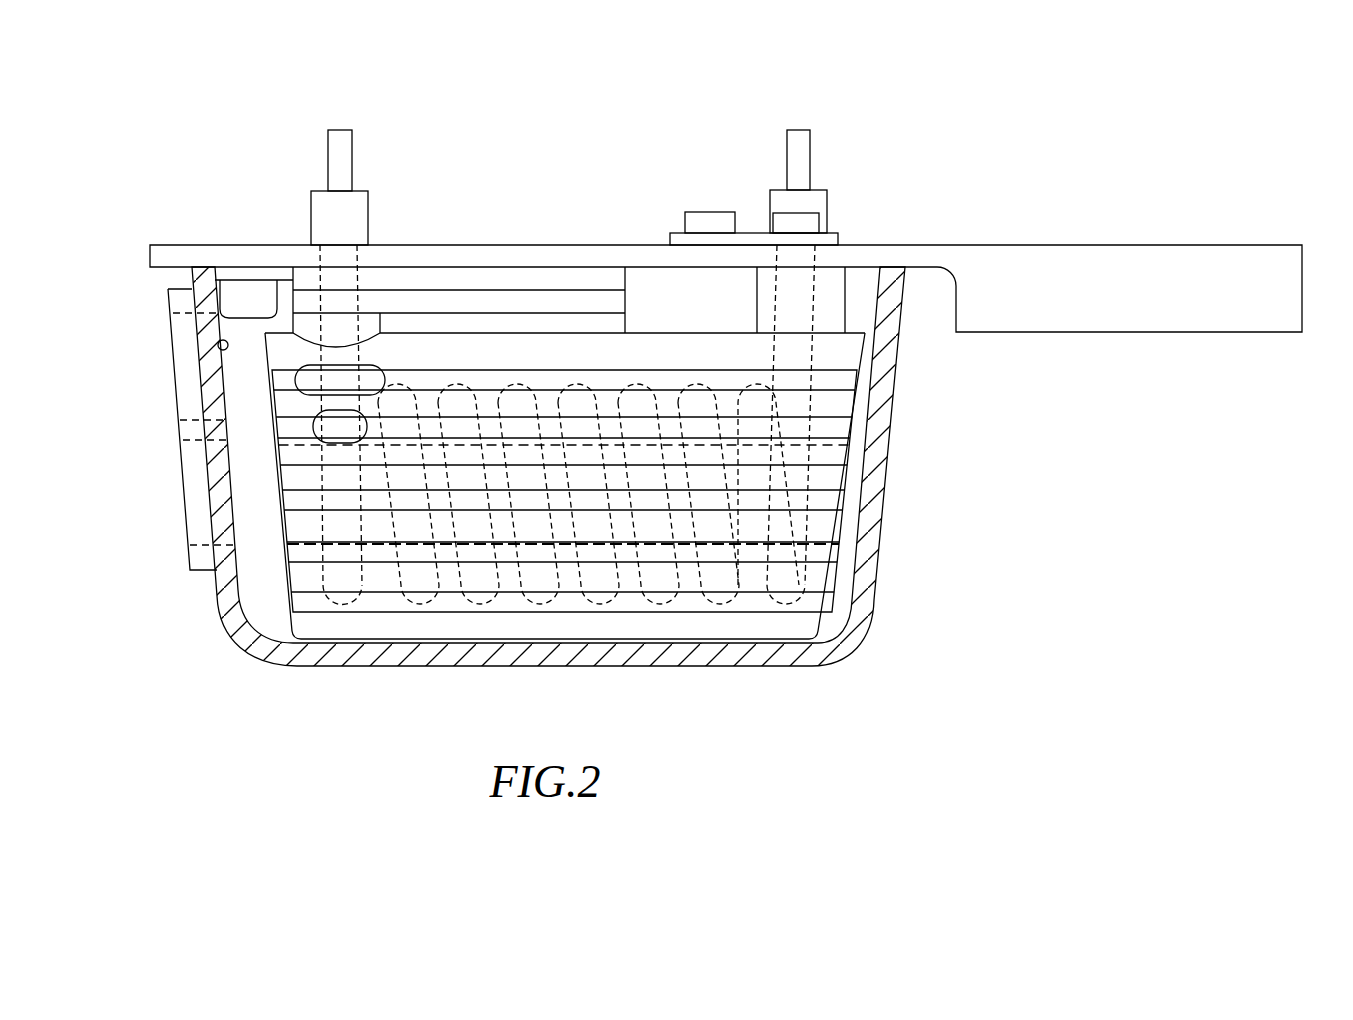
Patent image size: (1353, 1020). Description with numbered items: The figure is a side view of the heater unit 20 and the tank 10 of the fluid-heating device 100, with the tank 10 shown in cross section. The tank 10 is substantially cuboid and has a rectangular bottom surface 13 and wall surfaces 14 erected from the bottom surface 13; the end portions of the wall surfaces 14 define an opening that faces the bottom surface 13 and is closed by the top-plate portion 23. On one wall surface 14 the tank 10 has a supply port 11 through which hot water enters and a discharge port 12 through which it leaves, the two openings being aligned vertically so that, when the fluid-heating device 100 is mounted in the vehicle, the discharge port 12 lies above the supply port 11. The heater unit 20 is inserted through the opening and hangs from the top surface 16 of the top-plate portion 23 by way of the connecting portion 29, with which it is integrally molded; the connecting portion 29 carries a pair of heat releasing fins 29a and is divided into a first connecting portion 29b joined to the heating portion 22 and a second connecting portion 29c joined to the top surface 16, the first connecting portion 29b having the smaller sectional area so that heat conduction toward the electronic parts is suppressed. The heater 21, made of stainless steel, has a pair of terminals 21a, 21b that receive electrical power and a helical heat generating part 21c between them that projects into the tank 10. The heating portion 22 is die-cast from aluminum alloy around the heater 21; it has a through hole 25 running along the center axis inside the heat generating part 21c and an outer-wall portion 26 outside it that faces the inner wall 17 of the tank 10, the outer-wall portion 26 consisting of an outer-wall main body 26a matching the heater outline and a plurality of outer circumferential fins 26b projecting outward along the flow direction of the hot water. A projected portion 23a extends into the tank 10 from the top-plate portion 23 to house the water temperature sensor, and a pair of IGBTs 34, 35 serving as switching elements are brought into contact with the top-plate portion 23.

The fluid-heating device 100 is at (1206, 174).
The tank 10 is at (180, 437).
The supply port 11 is at (198, 543).
The discharge port 12 is at (193, 417).
The bottom surface 13 is at (297, 640).
The wall surfaces 14 is at (225, 562).
The top surface 16 is at (238, 267).
The inner wall 17 is at (218, 338).
The heater unit 20 is at (658, 320).
The heater 21 is at (564, 572).
The terminal 21a is at (337, 160).
The terminal 21b is at (797, 157).
The heat generating part 21c is at (477, 573).
The heating portion 22 is at (357, 628).
The top-plate portion 23 is at (573, 250).
The projected portion 23a is at (247, 298).
The through hole 25 is at (618, 530).
The outer-wall portion 26 is at (588, 581).
The outer-wall main body 26a is at (660, 570).
The outer circumferential fins 26b is at (735, 545).
The connecting portion 29 is at (565, 234).
The heat releasing fins 29a is at (455, 297).
The first connecting portion 29b is at (405, 323).
The second connecting portion 29c is at (502, 280).
The IGBT 34 is at (780, 217).
The IGBT 35 is at (717, 217).